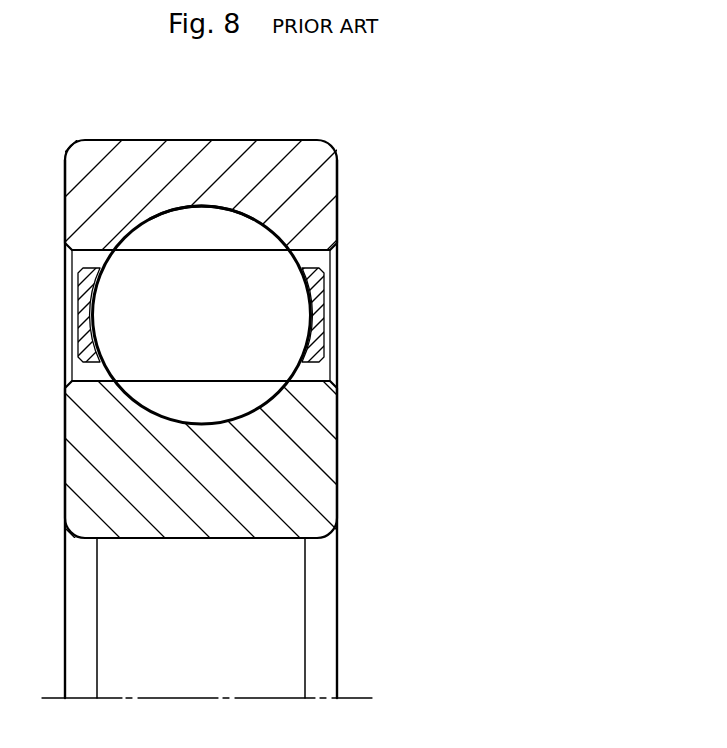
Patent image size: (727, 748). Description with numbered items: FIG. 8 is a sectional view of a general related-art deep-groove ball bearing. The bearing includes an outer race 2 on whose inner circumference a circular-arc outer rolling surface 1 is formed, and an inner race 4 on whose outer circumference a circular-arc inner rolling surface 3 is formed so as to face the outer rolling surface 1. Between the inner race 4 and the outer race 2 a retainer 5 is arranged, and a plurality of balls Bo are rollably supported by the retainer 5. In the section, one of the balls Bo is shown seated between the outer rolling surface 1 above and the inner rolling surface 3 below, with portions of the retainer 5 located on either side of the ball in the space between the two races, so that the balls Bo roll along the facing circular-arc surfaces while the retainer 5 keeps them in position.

The outer rolling surface 1 is at (166, 213).
The outer race 2 is at (285, 140).
The inner rolling surface 3 is at (179, 422).
The inner race 4 is at (337, 468).
The retainer 5 is at (323, 313).
The balls Bo is at (258, 250).